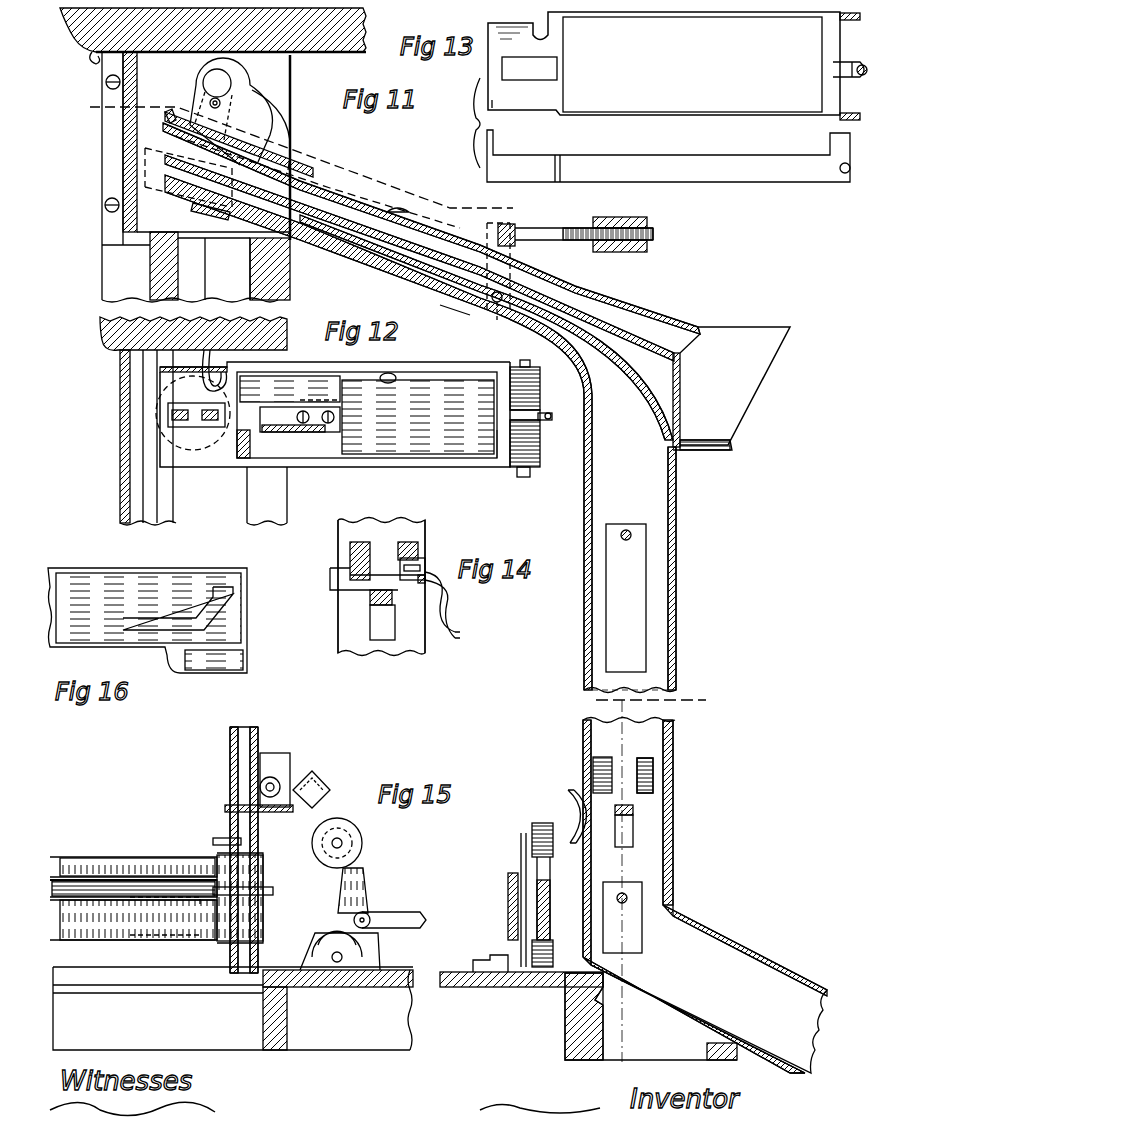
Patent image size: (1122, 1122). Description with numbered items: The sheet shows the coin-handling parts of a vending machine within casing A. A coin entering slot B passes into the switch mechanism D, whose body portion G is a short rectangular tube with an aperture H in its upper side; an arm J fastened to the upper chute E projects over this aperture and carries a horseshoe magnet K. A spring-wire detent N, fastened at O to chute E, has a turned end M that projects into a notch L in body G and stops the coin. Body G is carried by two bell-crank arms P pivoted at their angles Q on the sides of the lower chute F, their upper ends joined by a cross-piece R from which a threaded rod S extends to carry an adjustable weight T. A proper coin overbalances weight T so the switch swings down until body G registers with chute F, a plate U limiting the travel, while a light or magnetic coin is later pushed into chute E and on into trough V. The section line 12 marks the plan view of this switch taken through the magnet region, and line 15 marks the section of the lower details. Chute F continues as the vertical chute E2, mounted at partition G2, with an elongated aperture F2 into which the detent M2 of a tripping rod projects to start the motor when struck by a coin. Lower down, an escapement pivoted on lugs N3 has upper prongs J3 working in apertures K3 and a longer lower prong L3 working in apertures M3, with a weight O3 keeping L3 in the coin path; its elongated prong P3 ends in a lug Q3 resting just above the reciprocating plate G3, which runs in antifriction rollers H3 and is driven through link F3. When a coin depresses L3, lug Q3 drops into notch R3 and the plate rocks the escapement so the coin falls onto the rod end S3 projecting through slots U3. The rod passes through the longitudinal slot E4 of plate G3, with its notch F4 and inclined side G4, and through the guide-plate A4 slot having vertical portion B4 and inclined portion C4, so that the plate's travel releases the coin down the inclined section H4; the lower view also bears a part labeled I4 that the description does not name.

In FIG. 11, the casing A is at (108, 176).
In FIG. 12, the casing A is at (120, 500).
In FIG. 11, the coin slot B is at (128, 120).
In FIG. 12, the coin slot B is at (120, 378).
In FIG. 13, the switch mechanism D is at (688, 178).
In FIG. 11, the upper chute E is at (600, 294).
In FIG. 12, the upper chute E is at (335, 414).
In FIG. 11, the coin tube or chute F is at (458, 300).
In FIG. 11, the body portion G is at (185, 123).
In FIG. 13, the body portion G is at (517, 96).
In FIG. 12, the body portion G is at (193, 416).
In FIG. 13, the rectangular aperture H is at (540, 70).
In FIG. 12, the rectangular aperture H is at (170, 425).
In FIG. 11, the arm J is at (278, 140).
In FIG. 12, the arm J is at (292, 408).
In FIG. 11, the magnet K is at (250, 82).
In FIG. 12, the magnet K is at (170, 412).
In FIG. 13, the notch L is at (538, 28).
In FIG. 12, the notch L is at (205, 365).
In FIG. 11, the turned end of spring M is at (188, 177).
In FIG. 12, the turned end of spring M is at (230, 360).
In FIG. 11, the spring-wire detent N is at (335, 183).
In FIG. 12, the spring-wire detent N is at (300, 382).
In FIG. 11, the fastening point O is at (398, 208).
In FIG. 12, the fastening point O is at (404, 381).
In FIG. 12, the bell-crank arms P is at (445, 364).
In FIG. 11, the pivot angles Q is at (500, 317).
In FIG. 13, the pivot angles Q is at (844, 175).
In FIG. 12, the pivot angles Q is at (522, 483).
In FIG. 13, the cross-piece R is at (826, 58).
In FIG. 12, the cross-piece R is at (496, 445).
In FIG. 11, the screw-threaded rod S is at (585, 218).
In FIG. 13, the screw-threaded rod S is at (853, 66).
In FIG. 12, the screw-threaded rod S is at (551, 415).
In FIG. 11, the weight T is at (648, 222).
In FIG. 11, the plate U is at (193, 208).
In FIG. 11, the trough V is at (702, 401).
In FIG. 11, the section line 12 12 is at (285, 156).
In FIG. 11, the section line 15 15 is at (664, 702).
In FIG. 15, the section line 15 15 is at (618, 893).
In FIG. 11, the partition G2 is at (290, 270).
In FIG. 12, the partition G2 is at (292, 498).
In FIG. 11, the vertical chute E2 is at (630, 579).
In FIG. 14, the vertical chute E2 is at (352, 650).
In FIG. 11, the detent M2 is at (632, 535).
In FIG. 11, the elongated aperture F2 is at (630, 606).
In FIG. 14, the upper prongs J3 is at (400, 542).
In FIG. 15, the upper prongs J3 is at (645, 758).
In FIG. 14, the apertures K3 is at (350, 552).
In FIG. 15, the apertures K3 is at (655, 777).
In FIG. 14, the lower prong L3 is at (370, 598).
In FIG. 15, the lower prong L3 is at (633, 810).
In FIG. 14, the apertures M3 is at (385, 640).
In FIG. 15, the apertures M3 is at (633, 835).
In FIG. 15, the lugs N3 is at (290, 760).
In FIG. 14, the weight O3 is at (425, 565).
In FIG. 15, the weight O3 is at (326, 785).
In FIG. 14, the elongated prong P3 is at (444, 605).
In FIG. 15, the elongated prong P3 is at (160, 808).
In FIG. 14, the lateral lug Q3 is at (456, 635).
In FIG. 15, the notch R3 is at (200, 865).
In FIG. 15, the rod end S3 is at (630, 896).
In FIG. 15, the slots U3 is at (642, 942).
In FIG. 15, the link F3 is at (373, 919).
In FIG. 15, the reciprocating plate G3 is at (528, 860).
In FIG. 15, the antifriction rollers H3 is at (545, 990).
In FIG. 15, the base plate I4 is at (560, 995).
In FIG. 16, the guide-plate A4 is at (110, 560).
In FIG. 15, the guide-plate A4 is at (508, 900).
In FIG. 16, the vertical slot portion B4 is at (233, 598).
In FIG. 16, the inclined slot portion C4 is at (210, 618).
In FIG. 15, the longitudinal slot E4 is at (548, 893).
In FIG. 15, the inclined side G4 is at (150, 895).
In FIG. 15, the notch F4 is at (150, 895).
In FIG. 15, the inclined chute section H4 is at (705, 989).